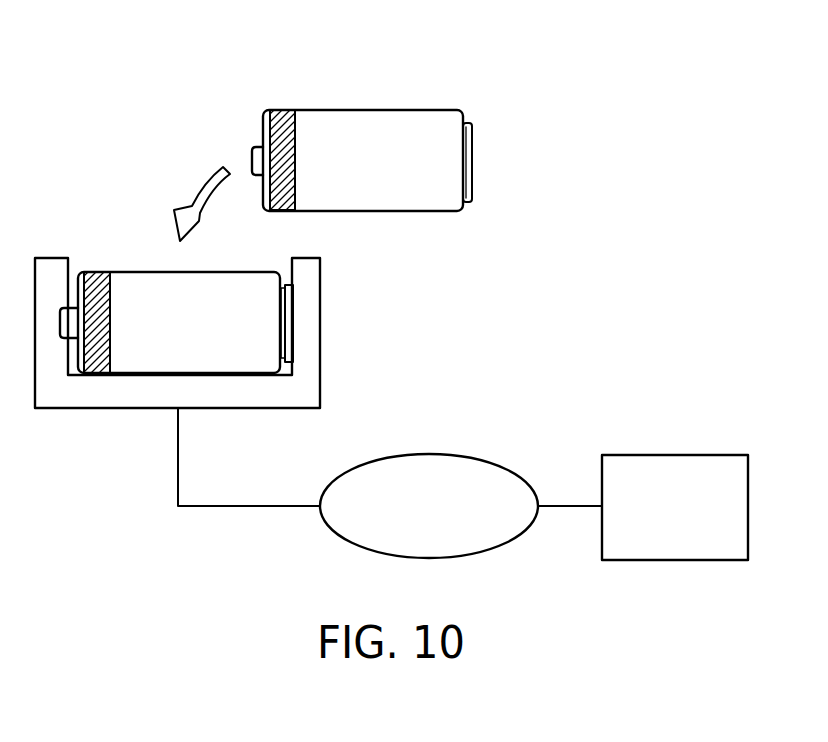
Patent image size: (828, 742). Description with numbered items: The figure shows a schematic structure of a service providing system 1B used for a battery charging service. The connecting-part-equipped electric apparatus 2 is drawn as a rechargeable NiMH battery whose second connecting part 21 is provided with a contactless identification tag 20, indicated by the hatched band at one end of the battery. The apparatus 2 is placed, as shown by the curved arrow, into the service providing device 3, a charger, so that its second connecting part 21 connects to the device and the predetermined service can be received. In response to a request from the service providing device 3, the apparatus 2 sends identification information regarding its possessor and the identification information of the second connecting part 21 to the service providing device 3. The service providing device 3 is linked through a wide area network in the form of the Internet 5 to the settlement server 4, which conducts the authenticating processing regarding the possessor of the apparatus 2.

The service providing system 1B is at (578, 157).
The connecting-part-equipped electric apparatus 2 is at (350, 112).
The contactless identification tag 20 is at (284, 109).
The second connecting part 21 is at (254, 158).
The service providing device 3 is at (101, 400).
The settlement server 4 is at (672, 455).
The Internet 5 is at (462, 455).